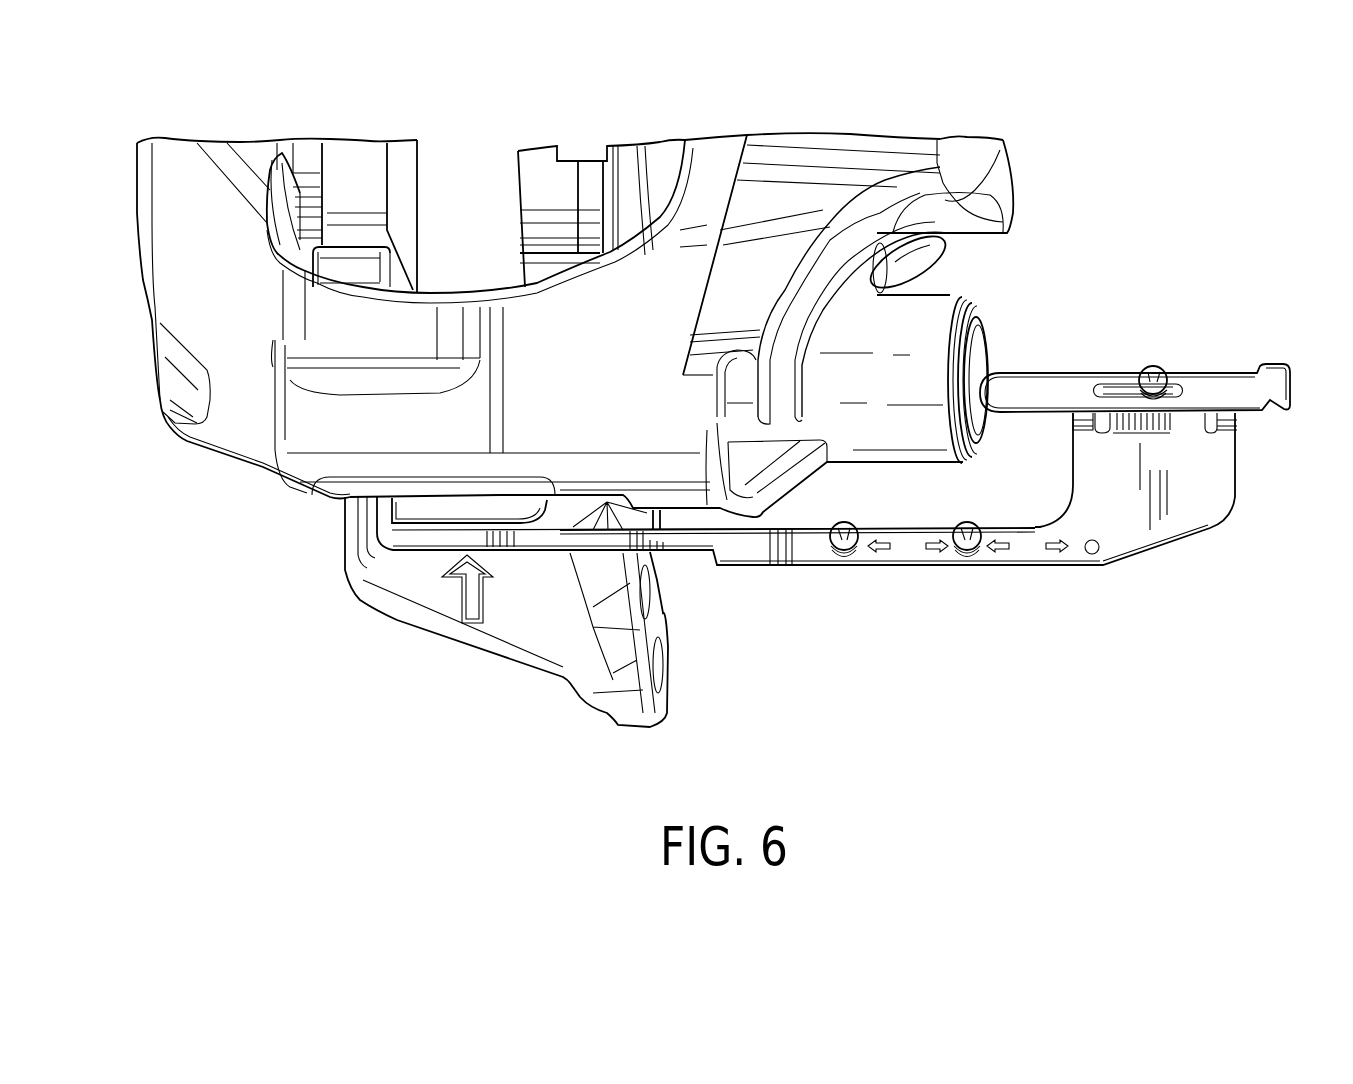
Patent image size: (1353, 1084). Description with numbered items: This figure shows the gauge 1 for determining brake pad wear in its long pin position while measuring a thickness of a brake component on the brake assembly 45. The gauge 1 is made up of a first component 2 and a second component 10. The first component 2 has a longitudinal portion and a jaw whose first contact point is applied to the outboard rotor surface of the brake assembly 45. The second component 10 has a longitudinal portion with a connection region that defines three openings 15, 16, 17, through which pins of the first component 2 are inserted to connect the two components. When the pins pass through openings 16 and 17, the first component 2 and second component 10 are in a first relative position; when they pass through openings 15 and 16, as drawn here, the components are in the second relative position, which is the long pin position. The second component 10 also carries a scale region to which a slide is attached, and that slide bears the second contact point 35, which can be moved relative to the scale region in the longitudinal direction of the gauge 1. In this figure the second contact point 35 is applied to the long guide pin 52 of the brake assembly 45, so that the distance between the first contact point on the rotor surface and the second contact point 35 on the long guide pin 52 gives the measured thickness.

The gauge 1 is at (767, 567).
The first component 2 is at (680, 553).
The second component 10 is at (1193, 533).
The opening 15 is at (860, 567).
The opening 16 is at (977, 563).
The opening 17 is at (1100, 563).
The second contact point 35 is at (990, 377).
The brake assembly 45 is at (575, 325).
The long guide pin 52 is at (980, 342).